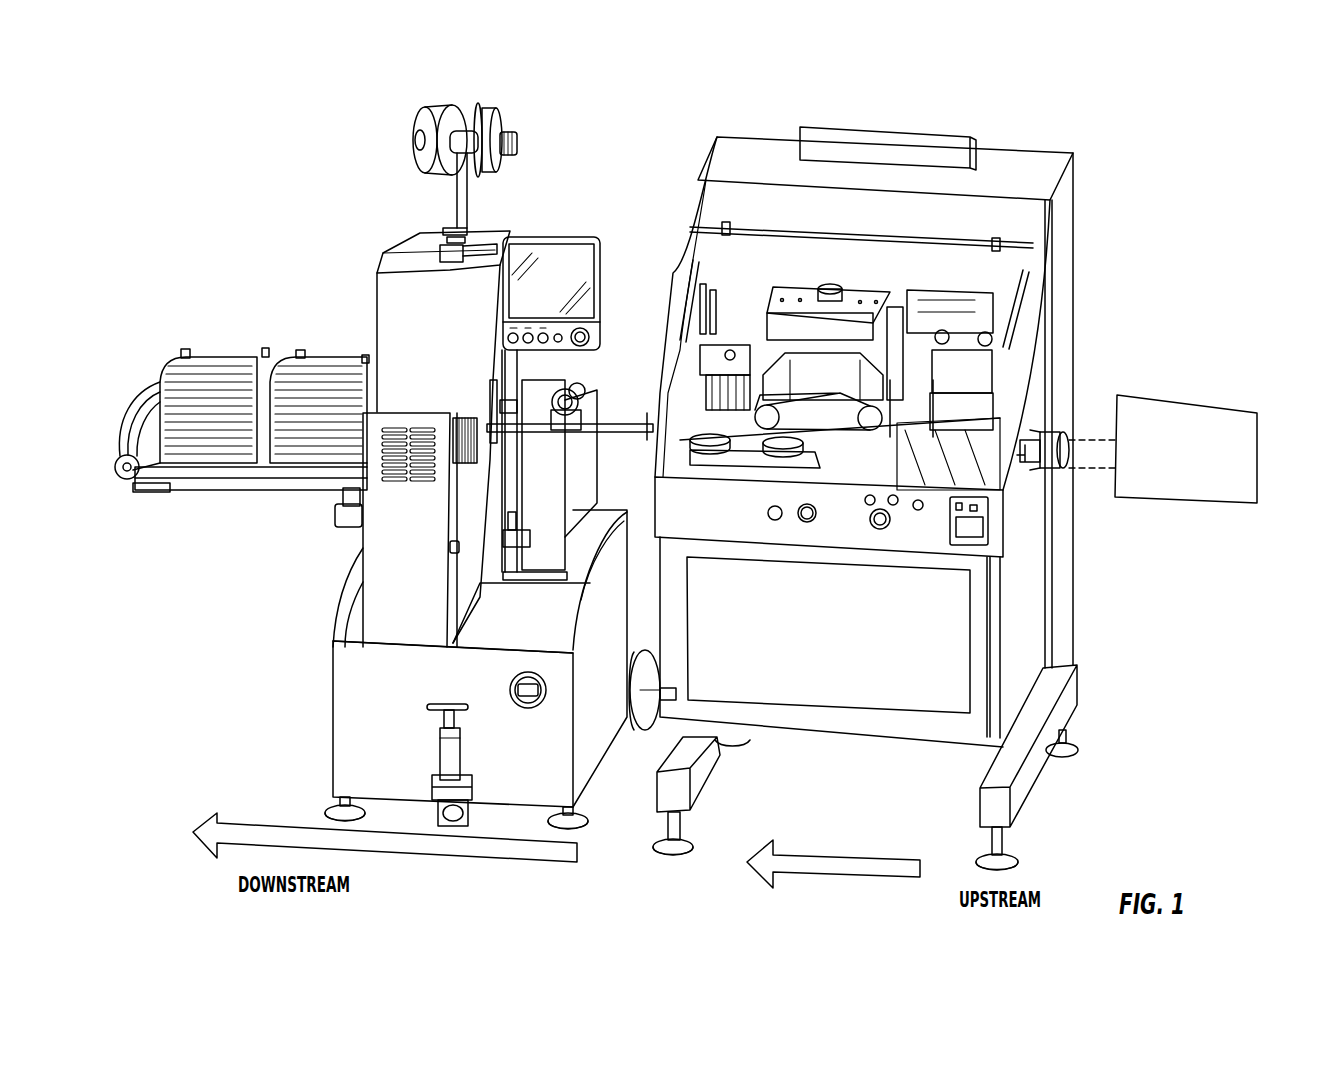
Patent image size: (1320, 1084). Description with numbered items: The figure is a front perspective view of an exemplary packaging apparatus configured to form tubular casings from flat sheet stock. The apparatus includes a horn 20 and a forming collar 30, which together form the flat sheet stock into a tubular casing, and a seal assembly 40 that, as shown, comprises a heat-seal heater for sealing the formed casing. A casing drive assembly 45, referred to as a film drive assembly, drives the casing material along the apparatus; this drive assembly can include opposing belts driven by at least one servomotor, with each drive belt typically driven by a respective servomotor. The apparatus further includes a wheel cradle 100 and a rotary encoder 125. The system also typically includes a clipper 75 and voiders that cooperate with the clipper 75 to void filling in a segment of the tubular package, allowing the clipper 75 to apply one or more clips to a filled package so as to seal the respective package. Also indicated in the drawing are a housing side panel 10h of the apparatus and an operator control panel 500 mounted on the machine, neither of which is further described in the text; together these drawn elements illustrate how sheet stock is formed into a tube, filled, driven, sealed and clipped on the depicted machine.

The housing side panel 10h is at (1060, 345).
The horn 20 is at (833, 443).
The forming collar 30 is at (927, 457).
The seal assembly 40 is at (804, 388).
The casing drive assembly 45 is at (746, 463).
The clipper 75 is at (414, 211).
The wheel cradle 100 is at (556, 440).
The rotary encoder 125 is at (549, 395).
The HMI control panel 500 is at (558, 253).